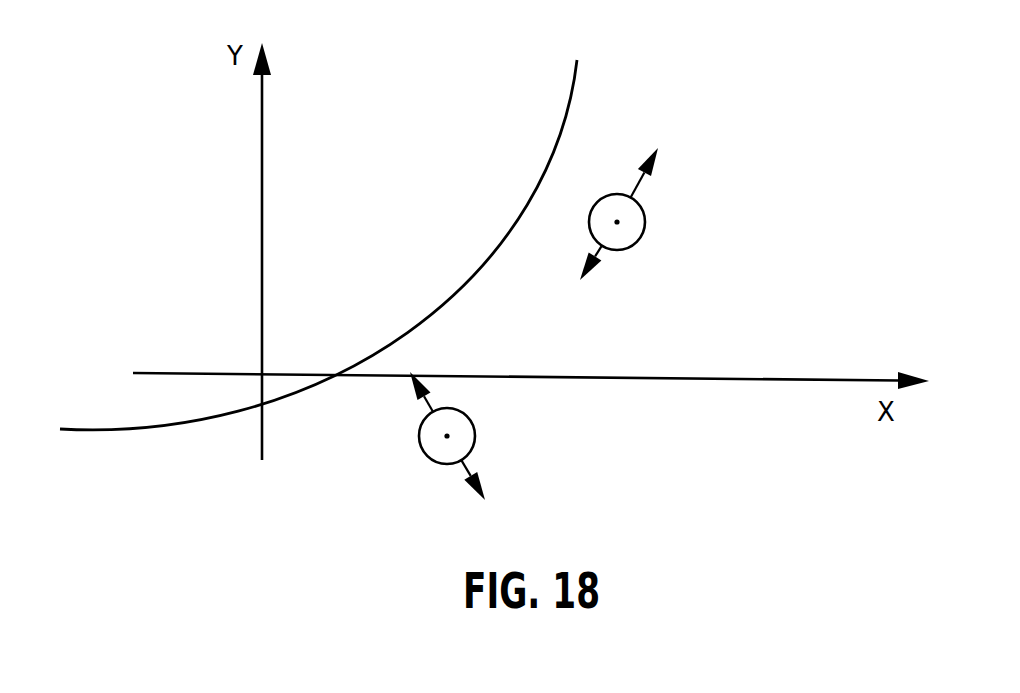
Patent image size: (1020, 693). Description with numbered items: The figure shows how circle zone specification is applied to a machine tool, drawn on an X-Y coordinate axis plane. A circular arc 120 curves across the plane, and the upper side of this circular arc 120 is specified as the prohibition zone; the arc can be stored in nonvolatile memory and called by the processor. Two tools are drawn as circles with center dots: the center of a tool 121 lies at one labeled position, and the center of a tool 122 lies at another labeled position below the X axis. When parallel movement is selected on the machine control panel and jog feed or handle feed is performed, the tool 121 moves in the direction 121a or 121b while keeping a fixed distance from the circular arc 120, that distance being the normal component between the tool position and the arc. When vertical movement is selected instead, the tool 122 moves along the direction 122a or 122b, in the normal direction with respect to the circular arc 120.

The circular arc 120 is at (318, 245).
The tool 121 is at (643, 228).
The direction 121a is at (577, 282).
The direction 121b is at (671, 161).
The tool 122 is at (452, 436).
The direction 122a is at (438, 377).
The direction 122b is at (497, 498).